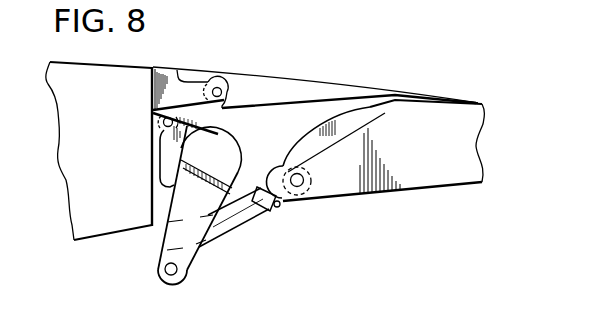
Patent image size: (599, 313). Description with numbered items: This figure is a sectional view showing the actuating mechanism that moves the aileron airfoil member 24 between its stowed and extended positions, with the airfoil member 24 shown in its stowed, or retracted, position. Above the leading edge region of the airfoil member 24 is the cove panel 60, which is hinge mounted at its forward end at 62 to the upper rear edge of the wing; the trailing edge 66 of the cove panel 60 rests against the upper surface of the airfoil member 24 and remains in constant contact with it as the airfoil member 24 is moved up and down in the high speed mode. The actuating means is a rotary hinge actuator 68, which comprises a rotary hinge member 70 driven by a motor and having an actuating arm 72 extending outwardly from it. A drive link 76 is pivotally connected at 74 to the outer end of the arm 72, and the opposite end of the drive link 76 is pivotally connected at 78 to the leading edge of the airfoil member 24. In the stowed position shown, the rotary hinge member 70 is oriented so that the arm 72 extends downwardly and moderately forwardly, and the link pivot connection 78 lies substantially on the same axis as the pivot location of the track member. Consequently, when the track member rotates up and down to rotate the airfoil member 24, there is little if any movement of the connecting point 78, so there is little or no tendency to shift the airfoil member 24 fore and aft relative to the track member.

The aileron airfoil member 24 is at (427, 112).
The cove panel 60 is at (340, 80).
The hinge mounting of cove panel 62 is at (224, 83).
The trailing edge of cove panel 66 is at (467, 101).
The rotary hinge actuator 68 is at (168, 161).
The rotary hinge member 70 is at (228, 148).
The actuating arm 72 is at (170, 237).
The pivot connection of arm to drive link 74 is at (163, 272).
The drive link 76 is at (258, 217).
The link pivot connection 78 is at (301, 185).